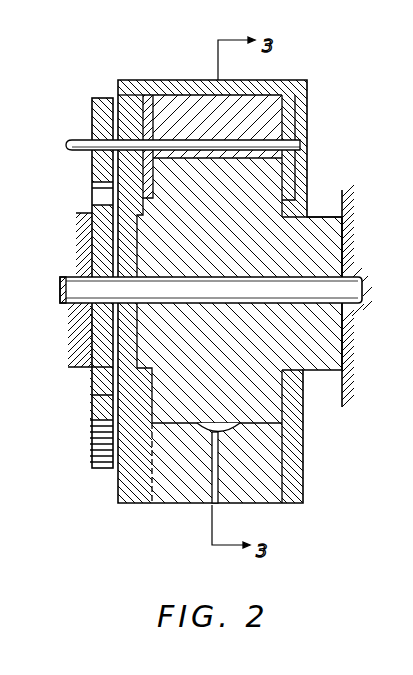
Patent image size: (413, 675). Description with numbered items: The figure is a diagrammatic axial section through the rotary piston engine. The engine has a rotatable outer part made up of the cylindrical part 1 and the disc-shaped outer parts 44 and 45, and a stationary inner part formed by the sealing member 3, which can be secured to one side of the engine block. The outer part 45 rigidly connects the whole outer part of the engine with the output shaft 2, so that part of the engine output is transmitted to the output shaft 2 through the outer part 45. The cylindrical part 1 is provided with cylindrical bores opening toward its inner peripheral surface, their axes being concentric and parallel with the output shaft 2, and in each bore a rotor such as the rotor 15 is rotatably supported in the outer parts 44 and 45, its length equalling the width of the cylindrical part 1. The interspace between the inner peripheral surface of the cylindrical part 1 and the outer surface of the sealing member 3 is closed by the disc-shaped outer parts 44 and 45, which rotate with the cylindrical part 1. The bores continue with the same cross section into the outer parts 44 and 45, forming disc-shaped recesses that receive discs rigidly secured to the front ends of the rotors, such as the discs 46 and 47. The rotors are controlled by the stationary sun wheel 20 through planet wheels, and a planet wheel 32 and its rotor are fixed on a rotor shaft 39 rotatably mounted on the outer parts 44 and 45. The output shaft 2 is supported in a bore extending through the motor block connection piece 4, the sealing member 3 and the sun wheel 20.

The cylindrical part 1 is at (182, 495).
The output shaft 2 is at (66, 290).
The sealing member 3 is at (321, 222).
The motor block connection piece 4 is at (350, 352).
The rotor 15 is at (193, 100).
The sun wheel 20 is at (95, 241).
The planet wheel 32 is at (101, 98).
The rotor shaft 39 is at (70, 145).
The outer part 44 is at (297, 459).
The outer part 45 is at (122, 500).
The disc 46 is at (305, 93).
The disc 47 is at (146, 95).